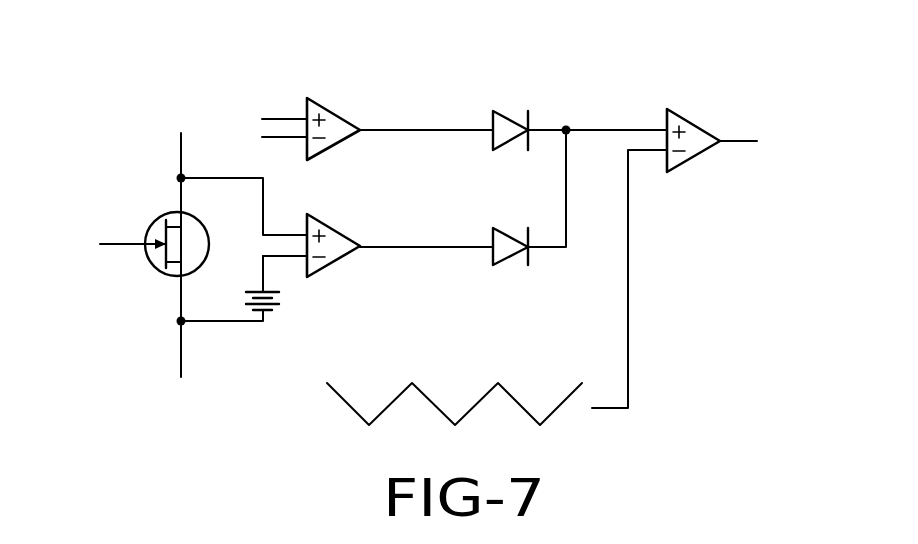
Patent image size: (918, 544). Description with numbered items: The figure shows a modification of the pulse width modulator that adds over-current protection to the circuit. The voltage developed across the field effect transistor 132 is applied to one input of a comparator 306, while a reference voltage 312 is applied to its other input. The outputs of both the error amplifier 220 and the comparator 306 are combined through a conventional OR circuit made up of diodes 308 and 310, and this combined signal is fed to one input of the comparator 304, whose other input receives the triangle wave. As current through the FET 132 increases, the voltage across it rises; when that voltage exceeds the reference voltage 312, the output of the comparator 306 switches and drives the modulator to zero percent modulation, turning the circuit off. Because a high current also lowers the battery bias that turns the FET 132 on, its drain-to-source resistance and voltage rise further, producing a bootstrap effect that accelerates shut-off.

The field effect transistor 132 is at (160, 273).
The error amplifier 220 is at (330, 108).
The comparator 304 is at (690, 118).
The comparator 306 is at (330, 224).
The diode 308 is at (495, 113).
The diode 310 is at (500, 263).
The reference voltage 312 is at (265, 306).